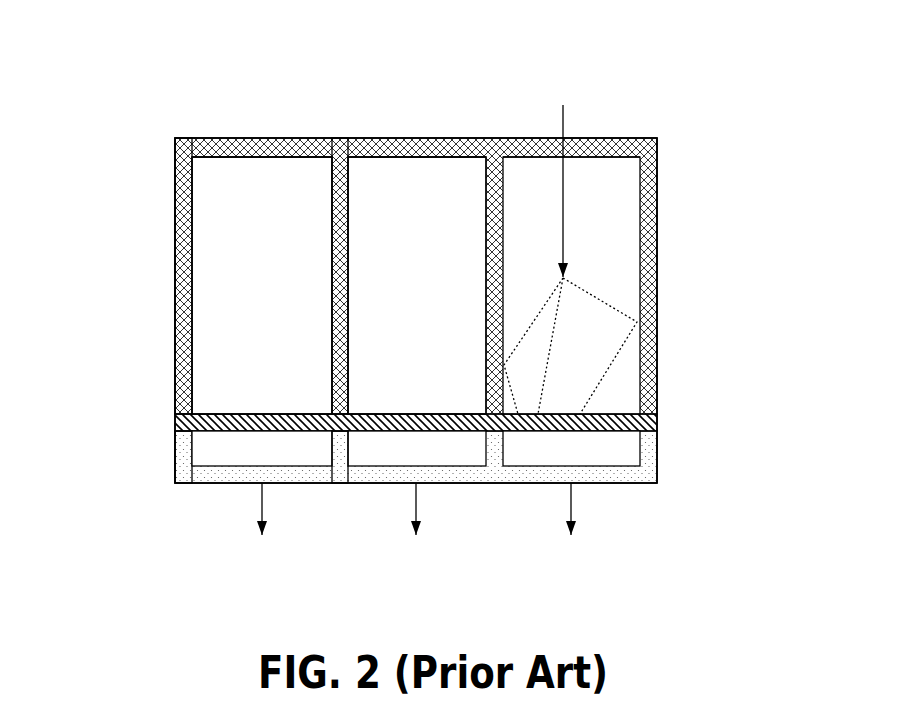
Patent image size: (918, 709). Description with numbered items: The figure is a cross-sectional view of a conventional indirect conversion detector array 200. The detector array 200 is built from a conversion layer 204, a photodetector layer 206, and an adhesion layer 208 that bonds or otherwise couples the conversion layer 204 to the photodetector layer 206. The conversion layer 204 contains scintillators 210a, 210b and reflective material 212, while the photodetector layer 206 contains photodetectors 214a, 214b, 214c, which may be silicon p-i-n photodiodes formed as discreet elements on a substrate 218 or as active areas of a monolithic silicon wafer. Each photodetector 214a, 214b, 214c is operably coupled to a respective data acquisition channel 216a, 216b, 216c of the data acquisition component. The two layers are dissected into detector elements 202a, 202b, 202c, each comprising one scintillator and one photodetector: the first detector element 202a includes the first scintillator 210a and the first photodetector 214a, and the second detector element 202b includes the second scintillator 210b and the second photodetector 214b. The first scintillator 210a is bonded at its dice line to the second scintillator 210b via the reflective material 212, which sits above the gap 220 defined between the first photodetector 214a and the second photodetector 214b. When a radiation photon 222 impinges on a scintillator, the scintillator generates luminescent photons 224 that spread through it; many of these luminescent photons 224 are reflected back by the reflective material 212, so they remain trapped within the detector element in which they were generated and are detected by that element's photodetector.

The indirect conversion detector array 200 is at (139, 65).
The first detector element 202a is at (262, 137).
The second detector element 202b is at (416, 137).
The detector element 202c is at (575, 137).
The conversion layer 204 is at (725, 139).
The photodetector layer 206 is at (725, 432).
The adhesion layer 208 is at (657, 423).
The first scintillator 210a is at (273, 289).
The second scintillator 210b is at (433, 287).
The reflective material 212 is at (182, 215).
The first photodetector 214a is at (262, 448).
The second photodetector 214b is at (417, 448).
The third photodetector 214c is at (571, 448).
The first data acquisition channel 216a is at (263, 536).
The second data acquisition channel 216b is at (416, 536).
The third data acquisition channel 216c is at (572, 536).
The substrate 218 is at (183, 468).
The gap 220 is at (336, 433).
The radiation photon 222 is at (563, 115).
The luminescent photons 224 is at (620, 311).